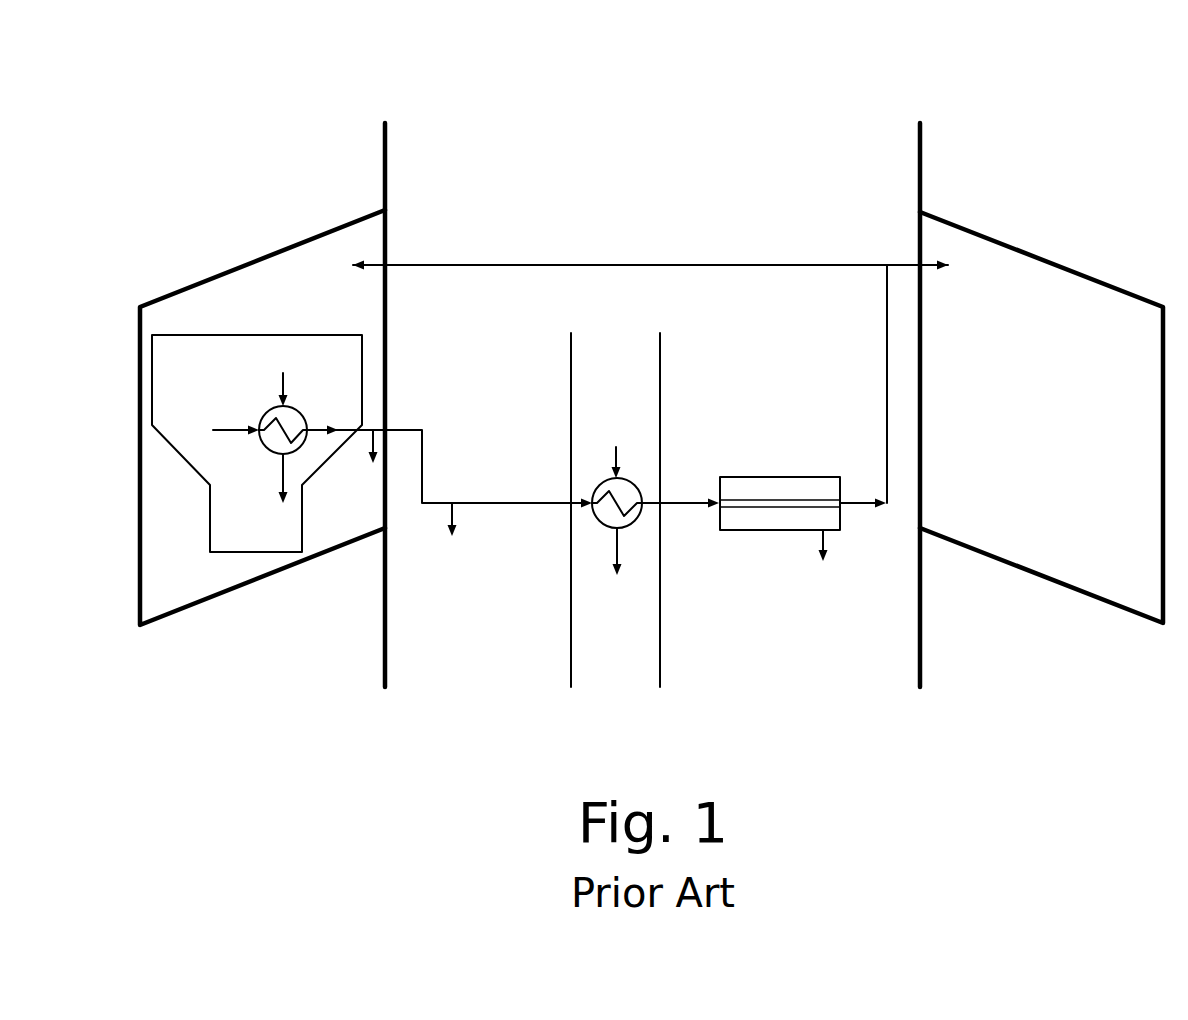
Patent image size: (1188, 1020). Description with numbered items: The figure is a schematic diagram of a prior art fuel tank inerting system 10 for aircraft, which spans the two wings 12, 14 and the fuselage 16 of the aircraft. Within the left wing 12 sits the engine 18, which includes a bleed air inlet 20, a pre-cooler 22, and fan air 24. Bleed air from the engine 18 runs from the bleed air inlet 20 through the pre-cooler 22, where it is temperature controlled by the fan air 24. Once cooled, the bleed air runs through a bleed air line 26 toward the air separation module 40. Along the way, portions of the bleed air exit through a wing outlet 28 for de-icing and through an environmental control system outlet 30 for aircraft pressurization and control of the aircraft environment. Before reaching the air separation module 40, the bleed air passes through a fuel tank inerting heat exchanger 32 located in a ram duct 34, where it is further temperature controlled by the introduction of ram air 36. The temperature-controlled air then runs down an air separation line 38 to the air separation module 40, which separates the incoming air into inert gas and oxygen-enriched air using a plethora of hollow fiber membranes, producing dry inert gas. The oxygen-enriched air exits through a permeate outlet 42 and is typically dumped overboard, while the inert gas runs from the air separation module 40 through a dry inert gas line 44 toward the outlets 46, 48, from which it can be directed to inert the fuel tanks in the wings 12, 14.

The fuel tank inerting system 10 is at (1103, 85).
The wing 12 is at (255, 298).
The wing 14 is at (998, 358).
The fuselage 16 is at (452, 181).
The engine 18 is at (166, 383).
The bleed air inlet 20 is at (218, 432).
The pre-cooler 22 is at (303, 404).
The fan air 24 is at (283, 375).
The bleed air line 26 is at (277, 477).
The wing outlet 28 is at (368, 446).
The environmental control system outlet 30 is at (455, 512).
The heat exchanger 32 is at (640, 475).
The ram duct 34 is at (602, 368).
The ram air 36 is at (615, 448).
The air separation line 38 is at (682, 507).
The air separation module 40 is at (768, 454).
The permeate outlet 42 is at (828, 540).
The dry inert gas line 44 is at (887, 360).
The outlet 46 is at (375, 258).
The outlet 48 is at (930, 258).